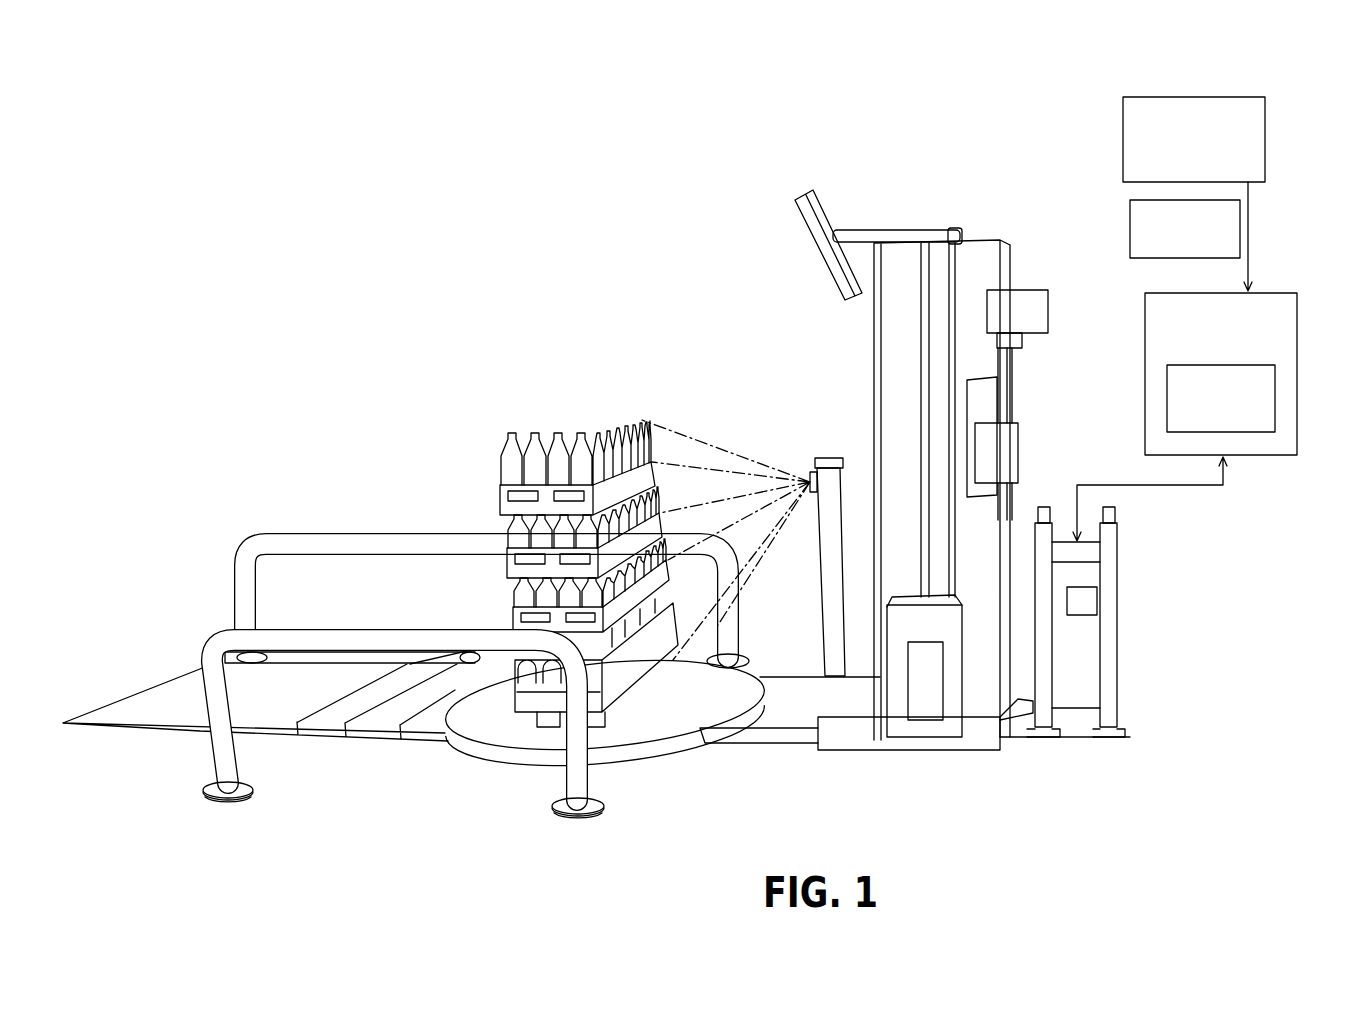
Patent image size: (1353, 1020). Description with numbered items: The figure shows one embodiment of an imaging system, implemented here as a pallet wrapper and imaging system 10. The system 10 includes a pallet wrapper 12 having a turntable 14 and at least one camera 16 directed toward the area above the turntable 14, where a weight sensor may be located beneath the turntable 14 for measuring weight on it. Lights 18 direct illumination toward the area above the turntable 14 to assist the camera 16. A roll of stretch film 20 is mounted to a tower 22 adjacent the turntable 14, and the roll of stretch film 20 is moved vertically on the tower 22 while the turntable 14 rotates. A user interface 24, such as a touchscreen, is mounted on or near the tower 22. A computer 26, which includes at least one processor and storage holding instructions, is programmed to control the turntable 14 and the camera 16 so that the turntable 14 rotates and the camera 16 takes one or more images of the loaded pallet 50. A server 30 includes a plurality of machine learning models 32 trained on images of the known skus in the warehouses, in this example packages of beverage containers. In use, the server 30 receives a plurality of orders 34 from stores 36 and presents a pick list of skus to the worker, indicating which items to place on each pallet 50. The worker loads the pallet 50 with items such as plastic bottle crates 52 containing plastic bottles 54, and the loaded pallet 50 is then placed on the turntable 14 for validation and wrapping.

The pallet wrapper and imaging system 10 is at (921, 86).
The pallet wrapper 12 is at (1013, 258).
The turntable 14 is at (662, 712).
The camera 16 is at (815, 462).
The lights 18 is at (812, 250).
The roll of stretch film 20 is at (905, 682).
The tower 22 is at (1012, 395).
The user interface 24 is at (1010, 453).
The computer 26 is at (1085, 633).
The server 30 is at (1216, 374).
The machine learning models 32 is at (1277, 397).
The orders 34 is at (1130, 230).
The stores 36 is at (1123, 157).
The pallet 50 is at (476, 603).
The bottle crates 52 is at (508, 628).
The bottles 54 is at (575, 437).